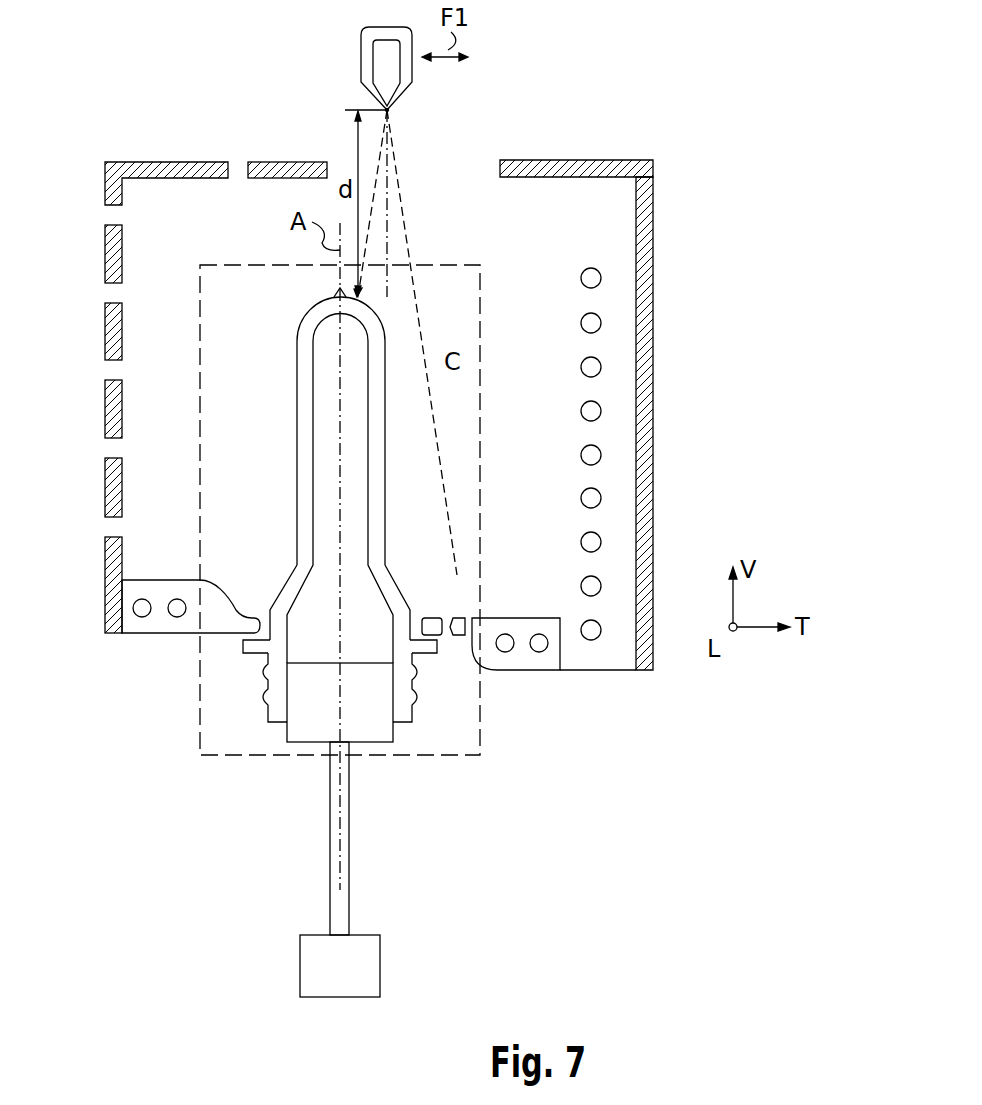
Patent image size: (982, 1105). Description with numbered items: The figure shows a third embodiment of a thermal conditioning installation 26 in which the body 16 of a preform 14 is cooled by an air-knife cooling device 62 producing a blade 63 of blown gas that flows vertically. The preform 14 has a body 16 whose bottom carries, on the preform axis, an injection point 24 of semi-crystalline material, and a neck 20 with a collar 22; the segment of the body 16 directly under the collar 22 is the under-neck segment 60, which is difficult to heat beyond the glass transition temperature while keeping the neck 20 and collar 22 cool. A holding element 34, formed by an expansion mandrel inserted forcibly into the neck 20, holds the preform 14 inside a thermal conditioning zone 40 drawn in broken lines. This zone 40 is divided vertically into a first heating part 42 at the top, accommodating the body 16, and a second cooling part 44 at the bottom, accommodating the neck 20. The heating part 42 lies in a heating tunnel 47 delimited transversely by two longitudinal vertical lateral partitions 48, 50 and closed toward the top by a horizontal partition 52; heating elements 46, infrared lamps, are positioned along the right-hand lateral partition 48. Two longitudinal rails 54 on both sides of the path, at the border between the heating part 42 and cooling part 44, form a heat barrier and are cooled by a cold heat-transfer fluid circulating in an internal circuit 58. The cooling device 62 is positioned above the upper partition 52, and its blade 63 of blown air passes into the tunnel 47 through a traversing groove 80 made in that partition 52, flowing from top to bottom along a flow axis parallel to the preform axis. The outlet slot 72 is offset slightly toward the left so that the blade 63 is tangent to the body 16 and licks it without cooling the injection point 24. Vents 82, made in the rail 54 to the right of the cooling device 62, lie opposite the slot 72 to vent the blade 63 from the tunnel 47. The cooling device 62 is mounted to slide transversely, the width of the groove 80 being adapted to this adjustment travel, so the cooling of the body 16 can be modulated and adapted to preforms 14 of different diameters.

The preform 14 is at (292, 636).
The body 16 is at (305, 370).
The neck 20 is at (270, 708).
The collar 22 is at (262, 655).
The injection point 24 is at (332, 300).
The thermal conditioning installation 26 is at (705, 267).
The holding element 34 is at (370, 730).
The thermal conditioning zone 40 is at (482, 690).
The first heating part 42 is at (246, 410).
The second cooling part 44 is at (452, 737).
The heating element 46 is at (595, 278).
The tunnel 47 is at (602, 384).
The lateral partition 48 is at (645, 500).
The lateral partition 50 is at (112, 340).
The horizontal partition 52 is at (518, 165).
The longitudinal rail 54 is at (162, 590).
The internal circuit 58 is at (178, 596).
The under-neck segment 60 is at (398, 605).
The cooling device 62 is at (369, 70).
The blade of blown gas 63 is at (410, 254).
The slot 72 is at (390, 112).
The traversing groove 80 is at (478, 172).
The vents 82 is at (461, 617).